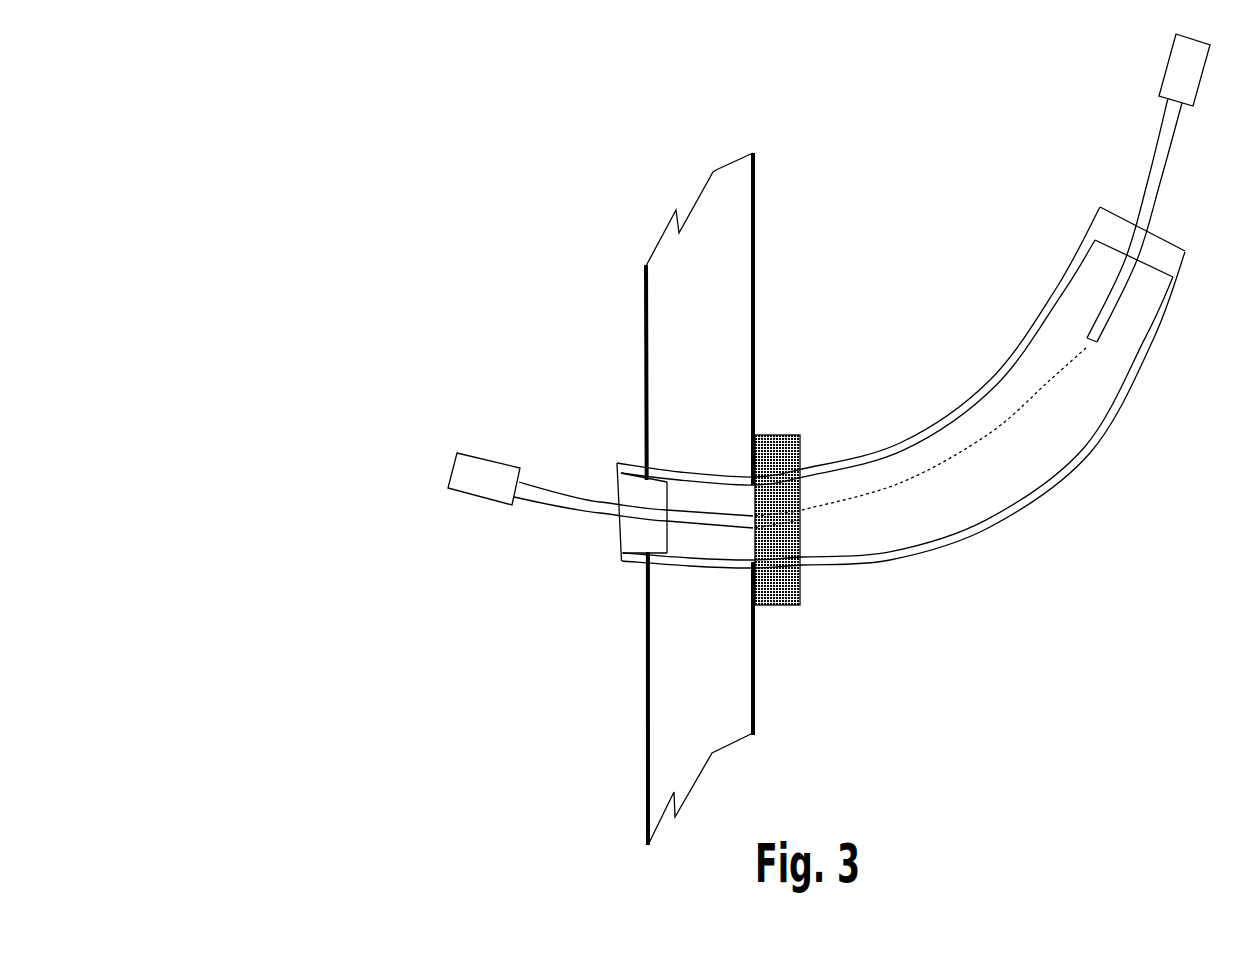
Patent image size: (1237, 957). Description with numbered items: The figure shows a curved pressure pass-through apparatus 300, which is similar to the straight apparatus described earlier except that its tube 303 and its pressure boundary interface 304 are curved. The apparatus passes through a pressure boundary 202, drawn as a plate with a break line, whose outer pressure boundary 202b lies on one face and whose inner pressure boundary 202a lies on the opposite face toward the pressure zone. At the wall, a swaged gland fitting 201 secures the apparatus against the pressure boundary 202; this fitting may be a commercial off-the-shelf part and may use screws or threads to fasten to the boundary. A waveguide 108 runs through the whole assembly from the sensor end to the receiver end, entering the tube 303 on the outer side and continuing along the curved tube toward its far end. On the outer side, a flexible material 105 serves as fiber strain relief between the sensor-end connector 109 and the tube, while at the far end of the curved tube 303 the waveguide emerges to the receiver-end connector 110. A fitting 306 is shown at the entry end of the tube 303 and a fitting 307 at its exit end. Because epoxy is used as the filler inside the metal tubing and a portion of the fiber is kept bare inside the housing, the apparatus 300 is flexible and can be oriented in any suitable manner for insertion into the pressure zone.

The curved pressure pass-through apparatus 300 is at (216, 117).
The pressure boundary 202 is at (711, 474).
The inner pressure boundary 202a is at (757, 267).
The outer pressure boundary 202b is at (647, 297).
The swaged gland fitting 201 is at (788, 587).
The tube 303 is at (933, 528).
The pressure boundary interface 304 is at (1047, 473).
The tube end fitting 307 is at (1100, 236).
The tube sleeve fitting 306 is at (665, 532).
The flexible material 105 is at (585, 512).
The waveguide 108 is at (892, 484).
The connector 109 is at (488, 472).
The connector 110 is at (1173, 79).